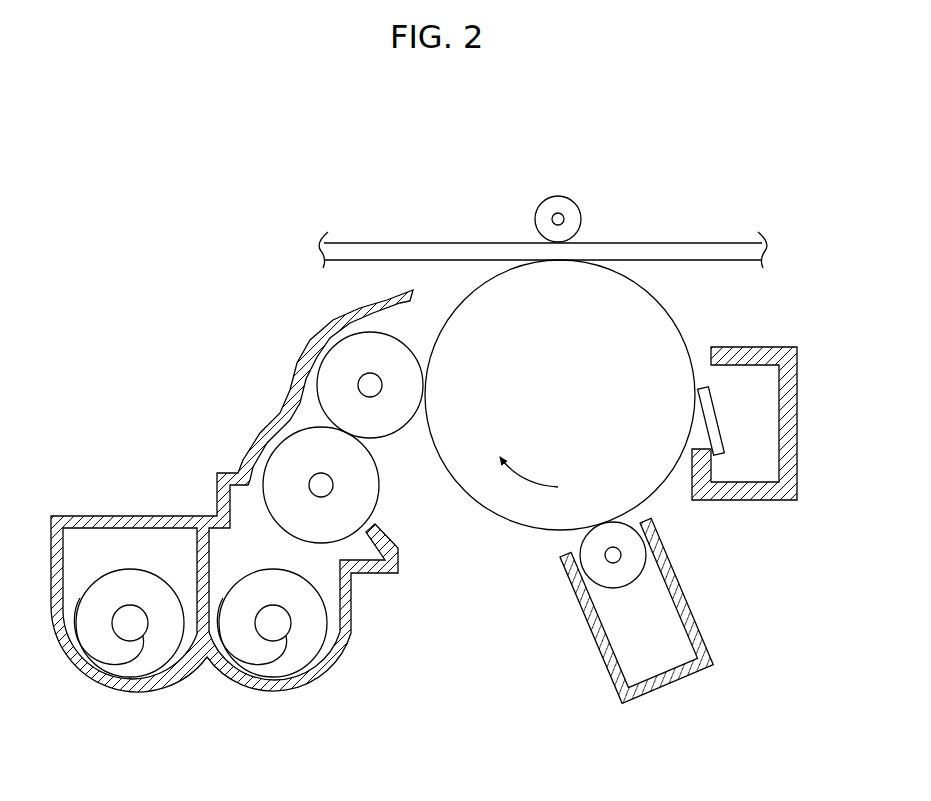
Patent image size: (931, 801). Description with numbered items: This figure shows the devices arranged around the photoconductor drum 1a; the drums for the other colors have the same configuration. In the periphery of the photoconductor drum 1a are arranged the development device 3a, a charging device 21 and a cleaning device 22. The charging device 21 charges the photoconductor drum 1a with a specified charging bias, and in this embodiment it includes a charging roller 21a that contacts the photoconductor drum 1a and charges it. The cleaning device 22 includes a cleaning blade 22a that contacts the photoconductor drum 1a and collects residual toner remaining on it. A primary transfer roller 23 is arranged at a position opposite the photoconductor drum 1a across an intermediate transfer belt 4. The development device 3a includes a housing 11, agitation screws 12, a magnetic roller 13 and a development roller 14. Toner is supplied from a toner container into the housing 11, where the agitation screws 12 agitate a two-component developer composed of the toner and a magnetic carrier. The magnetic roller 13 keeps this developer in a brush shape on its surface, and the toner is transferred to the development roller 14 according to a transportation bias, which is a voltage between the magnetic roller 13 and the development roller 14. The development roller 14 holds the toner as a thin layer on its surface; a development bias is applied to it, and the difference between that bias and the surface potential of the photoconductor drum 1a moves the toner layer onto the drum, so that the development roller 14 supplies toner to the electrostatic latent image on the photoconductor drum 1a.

The photoconductor drum 1a is at (678, 320).
The development device 3a is at (176, 386).
The intermediate transfer belt 4 is at (676, 247).
The housing 11 is at (345, 633).
The agitation screws 12 is at (140, 653).
The magnetic roller 13 is at (380, 500).
The development roller 14 is at (387, 342).
The charging device 21 is at (703, 631).
The charging roller 21a is at (620, 578).
The cleaning device 22 is at (758, 346).
The cleaning blade 22a is at (716, 424).
The primary transfer roller 23 is at (576, 209).